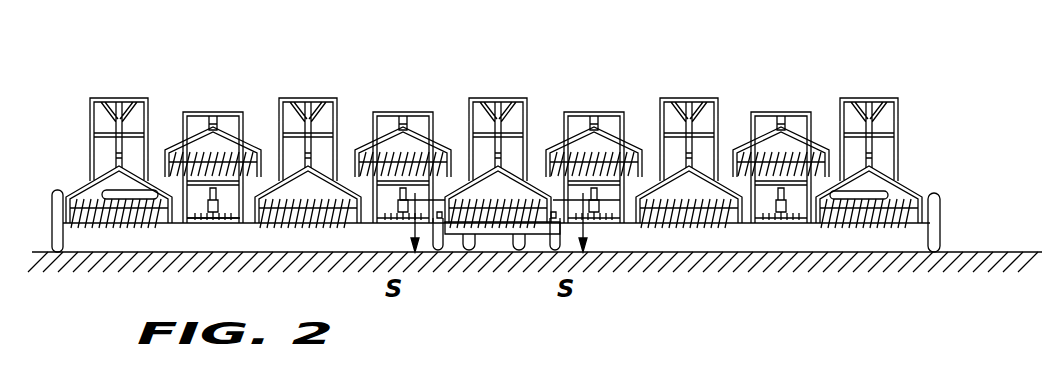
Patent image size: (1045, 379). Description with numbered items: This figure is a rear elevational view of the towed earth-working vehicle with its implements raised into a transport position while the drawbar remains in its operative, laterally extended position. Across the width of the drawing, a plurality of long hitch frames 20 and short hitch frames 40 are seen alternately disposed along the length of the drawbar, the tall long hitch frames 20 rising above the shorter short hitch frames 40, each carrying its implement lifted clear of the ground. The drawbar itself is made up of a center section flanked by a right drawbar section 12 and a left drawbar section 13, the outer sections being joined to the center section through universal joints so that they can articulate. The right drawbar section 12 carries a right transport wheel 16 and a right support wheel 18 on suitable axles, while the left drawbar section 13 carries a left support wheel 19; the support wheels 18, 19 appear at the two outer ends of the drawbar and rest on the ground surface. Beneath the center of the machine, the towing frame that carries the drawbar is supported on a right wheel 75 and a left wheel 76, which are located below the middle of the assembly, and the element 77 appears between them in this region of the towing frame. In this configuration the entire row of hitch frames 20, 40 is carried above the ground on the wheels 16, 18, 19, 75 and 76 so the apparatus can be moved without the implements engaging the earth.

The right drawbar section 12 is at (812, 224).
The left drawbar section 13 is at (224, 222).
The right transport wheel 16 is at (872, 196).
The right support wheel 18 is at (936, 193).
The left support wheel 19 is at (128, 193).
The long hitch frame 20 is at (53, 208).
The short hitch frame 40 is at (213, 112).
The right wheel 75 is at (537, 247).
The left wheel 76 is at (455, 247).
The carriage 77 is at (500, 234).